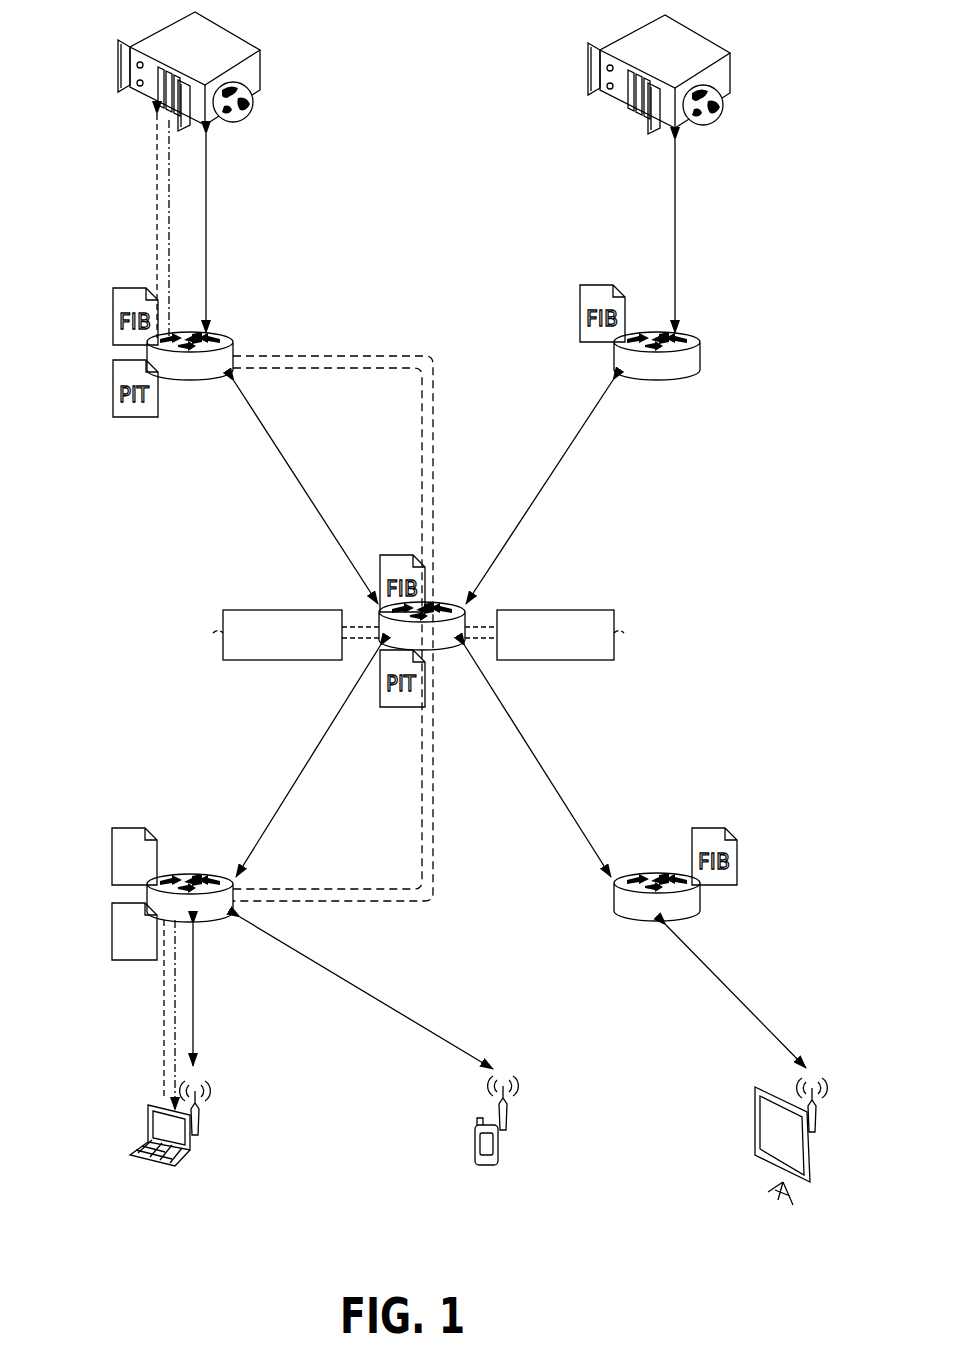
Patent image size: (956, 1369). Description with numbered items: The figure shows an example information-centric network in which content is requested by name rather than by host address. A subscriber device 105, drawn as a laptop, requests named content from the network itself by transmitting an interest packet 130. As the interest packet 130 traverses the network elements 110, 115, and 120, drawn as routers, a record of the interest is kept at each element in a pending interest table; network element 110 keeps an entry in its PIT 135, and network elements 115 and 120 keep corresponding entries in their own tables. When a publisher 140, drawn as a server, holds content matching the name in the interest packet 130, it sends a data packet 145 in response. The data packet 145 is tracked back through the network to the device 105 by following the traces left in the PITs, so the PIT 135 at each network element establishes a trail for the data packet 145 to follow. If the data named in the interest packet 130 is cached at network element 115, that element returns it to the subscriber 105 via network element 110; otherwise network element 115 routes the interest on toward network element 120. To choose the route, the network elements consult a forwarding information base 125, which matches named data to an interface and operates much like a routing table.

The device 105 is at (152, 1105).
The network element 110 is at (207, 920).
The network element 115 is at (442, 643).
The network element 120 is at (233, 342).
The forwarding information base 125 is at (112, 862).
The interest packet 130 is at (282, 610).
The pending interest table 135 is at (112, 935).
The publisher 140 is at (162, 30).
The data packet 145 is at (557, 610).